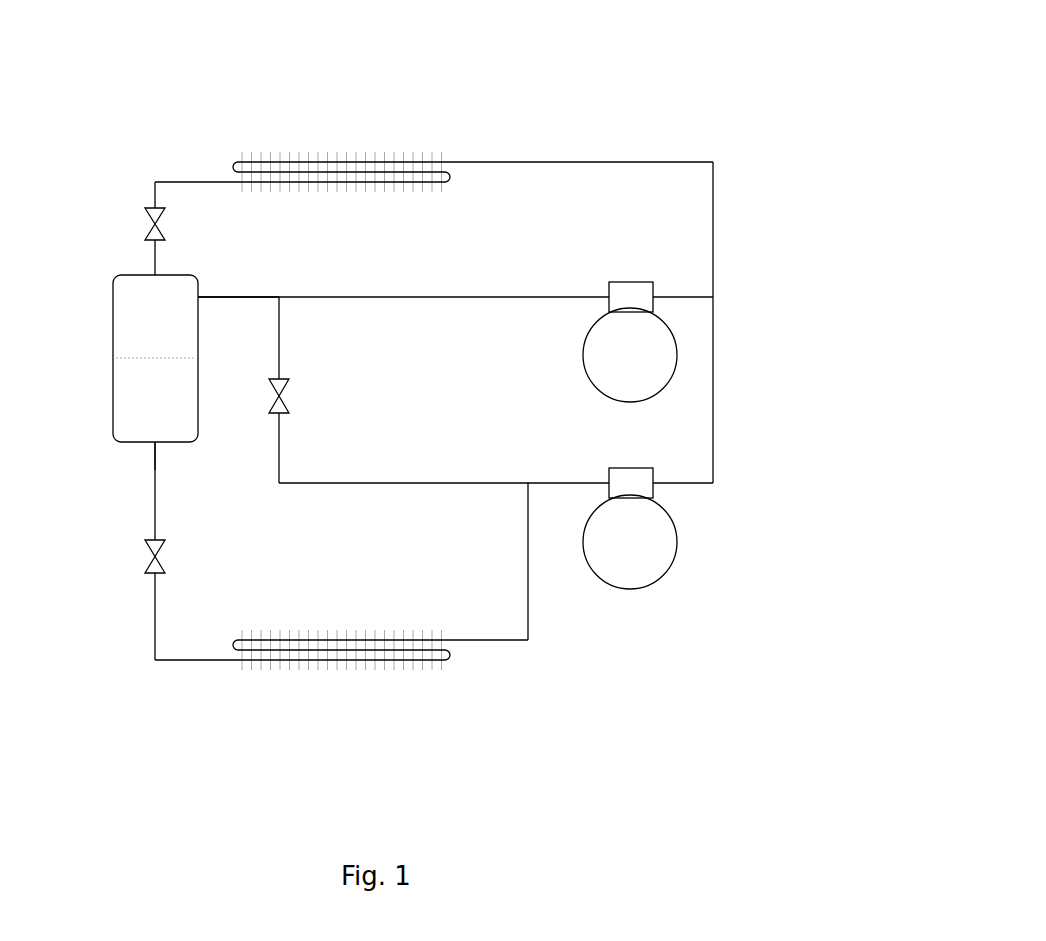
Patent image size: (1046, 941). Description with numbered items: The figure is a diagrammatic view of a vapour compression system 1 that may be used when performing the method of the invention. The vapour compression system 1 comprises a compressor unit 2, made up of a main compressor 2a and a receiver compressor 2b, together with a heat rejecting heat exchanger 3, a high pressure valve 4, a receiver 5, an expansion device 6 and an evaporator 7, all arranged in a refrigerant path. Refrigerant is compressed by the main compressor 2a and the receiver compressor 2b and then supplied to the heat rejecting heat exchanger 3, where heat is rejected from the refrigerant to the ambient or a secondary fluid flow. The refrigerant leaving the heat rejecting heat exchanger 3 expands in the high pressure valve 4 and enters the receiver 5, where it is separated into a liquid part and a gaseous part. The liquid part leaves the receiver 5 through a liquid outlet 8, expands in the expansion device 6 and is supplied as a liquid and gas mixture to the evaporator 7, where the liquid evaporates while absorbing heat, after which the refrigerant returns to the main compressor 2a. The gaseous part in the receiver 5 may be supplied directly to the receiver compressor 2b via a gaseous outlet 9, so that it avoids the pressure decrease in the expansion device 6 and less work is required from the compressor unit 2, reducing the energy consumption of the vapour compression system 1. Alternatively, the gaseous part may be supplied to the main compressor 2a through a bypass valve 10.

The vapour compression system 1 is at (640, 62).
The compressor unit 2 is at (690, 522).
The main compressor 2a is at (654, 543).
The receiver compressor 2b is at (607, 363).
The heat rejecting heat exchanger 3 is at (333, 163).
The high pressure valve 4 is at (148, 212).
The receiver 5 is at (137, 312).
The expansion device 6 is at (148, 552).
The evaporator 7 is at (358, 650).
The liquid outlet 8 is at (150, 447).
The gaseous outlet 9 is at (204, 293).
The bypass valve 10 is at (291, 382).